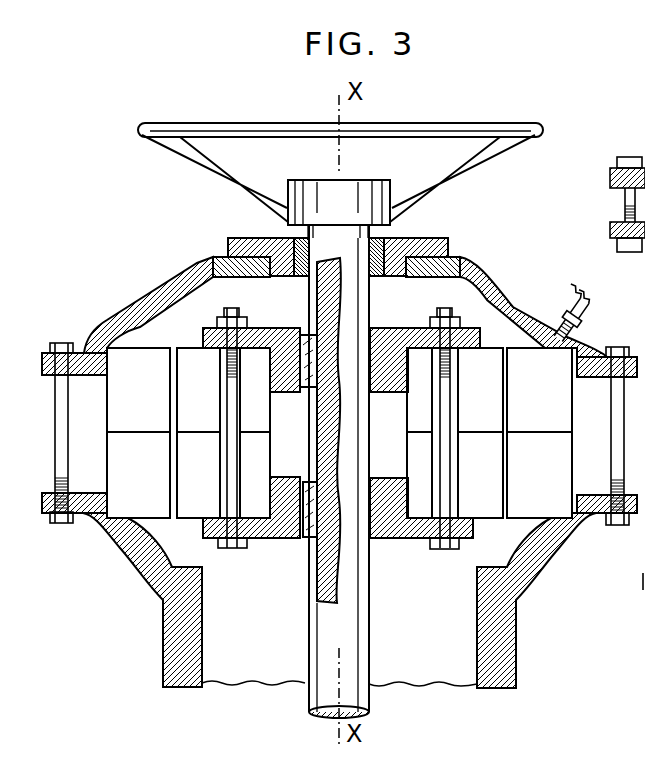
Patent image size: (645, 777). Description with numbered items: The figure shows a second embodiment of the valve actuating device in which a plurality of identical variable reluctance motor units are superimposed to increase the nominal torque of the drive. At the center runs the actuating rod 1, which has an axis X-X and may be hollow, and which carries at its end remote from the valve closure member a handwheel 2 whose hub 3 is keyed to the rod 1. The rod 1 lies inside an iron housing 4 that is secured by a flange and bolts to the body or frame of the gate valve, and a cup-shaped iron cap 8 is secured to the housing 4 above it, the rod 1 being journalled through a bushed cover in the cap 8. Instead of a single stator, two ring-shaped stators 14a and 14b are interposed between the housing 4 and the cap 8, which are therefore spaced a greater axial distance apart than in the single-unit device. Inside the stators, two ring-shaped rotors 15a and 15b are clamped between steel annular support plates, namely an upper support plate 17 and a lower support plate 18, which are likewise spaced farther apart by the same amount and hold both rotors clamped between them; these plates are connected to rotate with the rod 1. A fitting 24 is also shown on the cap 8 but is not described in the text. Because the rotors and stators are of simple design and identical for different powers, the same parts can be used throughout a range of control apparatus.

The actuating rod 1 is at (370, 663).
The handwheel 2 is at (467, 168).
The hub 3 is at (377, 210).
The housing 4 is at (500, 648).
The cap 8 is at (528, 320).
The stator 14a is at (122, 472).
The stator 14b is at (125, 398).
The rotor 15a is at (195, 500).
The rotor 15b is at (195, 365).
The upper support plate 17 is at (400, 326).
The lower support plate 18 is at (400, 540).
The pipe connection 24 is at (582, 297).